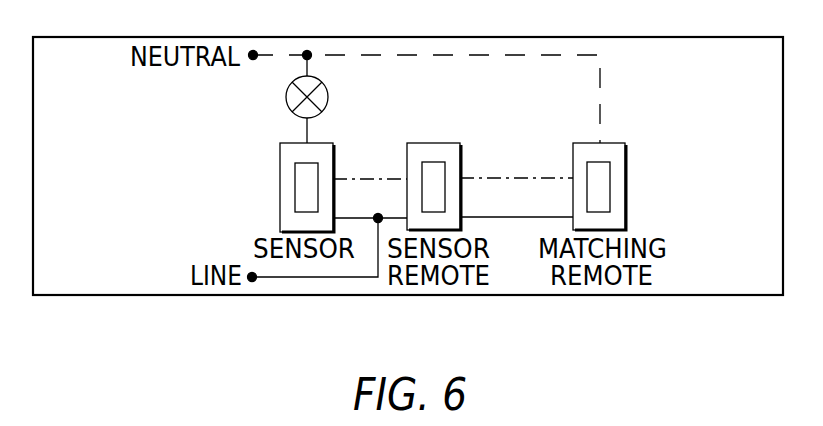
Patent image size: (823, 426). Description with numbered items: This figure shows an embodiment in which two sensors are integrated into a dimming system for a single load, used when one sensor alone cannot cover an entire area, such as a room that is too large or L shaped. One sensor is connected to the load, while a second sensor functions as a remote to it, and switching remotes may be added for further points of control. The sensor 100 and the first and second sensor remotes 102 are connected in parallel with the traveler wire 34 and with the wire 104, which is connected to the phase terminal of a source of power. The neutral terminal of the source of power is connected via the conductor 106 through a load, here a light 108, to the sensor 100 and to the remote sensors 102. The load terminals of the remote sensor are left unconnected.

The sensor 100 is at (280, 183).
The sensor remotes 102 is at (428, 143).
The wire 104 is at (485, 217).
The conductor 106 is at (440, 55).
The light 108 is at (328, 97).
The traveler wire 34 is at (340, 178).